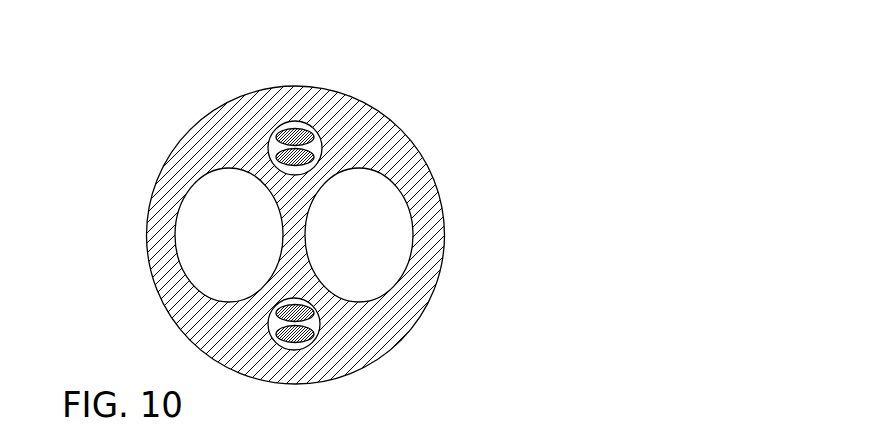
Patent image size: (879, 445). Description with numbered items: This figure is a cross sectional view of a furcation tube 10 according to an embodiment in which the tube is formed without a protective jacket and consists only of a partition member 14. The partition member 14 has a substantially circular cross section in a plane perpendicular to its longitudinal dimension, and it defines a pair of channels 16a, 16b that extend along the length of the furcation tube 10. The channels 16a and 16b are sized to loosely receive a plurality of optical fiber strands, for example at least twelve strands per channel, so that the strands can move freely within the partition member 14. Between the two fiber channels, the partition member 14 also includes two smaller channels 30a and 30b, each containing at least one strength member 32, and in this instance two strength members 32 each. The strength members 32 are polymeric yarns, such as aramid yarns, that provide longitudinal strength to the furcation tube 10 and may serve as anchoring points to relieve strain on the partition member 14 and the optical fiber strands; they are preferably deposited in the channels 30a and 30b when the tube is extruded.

The furcation tube 10 is at (128, 297).
The partition member 14 is at (408, 138).
The first channel 16a is at (194, 222).
The second channel 16b is at (393, 233).
The first additional channel 30a is at (302, 121).
The second additional channel 30b is at (313, 343).
The strength members 32 is at (290, 128).